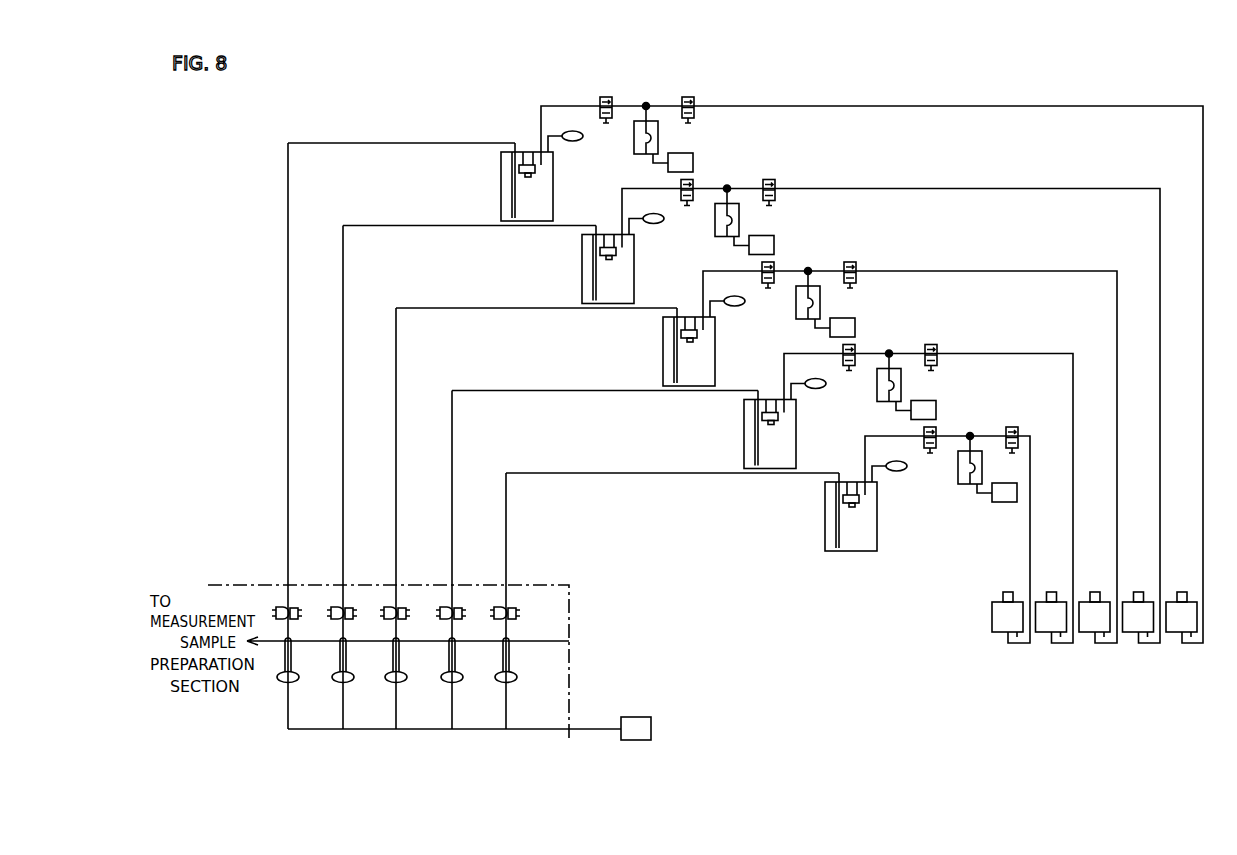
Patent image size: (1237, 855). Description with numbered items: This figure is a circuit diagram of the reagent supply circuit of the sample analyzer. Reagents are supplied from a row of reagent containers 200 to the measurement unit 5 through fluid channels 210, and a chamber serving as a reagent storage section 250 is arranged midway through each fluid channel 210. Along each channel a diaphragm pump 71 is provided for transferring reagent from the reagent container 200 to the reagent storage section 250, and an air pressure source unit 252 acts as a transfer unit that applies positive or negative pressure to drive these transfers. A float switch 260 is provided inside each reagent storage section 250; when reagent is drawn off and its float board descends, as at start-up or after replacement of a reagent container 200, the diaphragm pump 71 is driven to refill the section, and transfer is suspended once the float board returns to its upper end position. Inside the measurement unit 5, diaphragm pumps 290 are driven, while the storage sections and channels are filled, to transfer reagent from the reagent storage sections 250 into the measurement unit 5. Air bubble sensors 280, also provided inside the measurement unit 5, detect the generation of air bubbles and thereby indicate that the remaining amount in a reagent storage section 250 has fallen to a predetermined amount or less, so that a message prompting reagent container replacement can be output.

The measurement unit 5 is at (525, 585).
The diaphragm pump 71 is at (958, 478).
The reagent container 200 is at (1171, 633).
The fluid channel 210 is at (948, 354).
The reagent storage section 250 is at (825, 514).
The air pressure source unit 252 is at (635, 717).
The float switch 260 is at (853, 480).
The air bubble sensor 280 is at (498, 606).
The diaphragm pump 290 is at (501, 683).